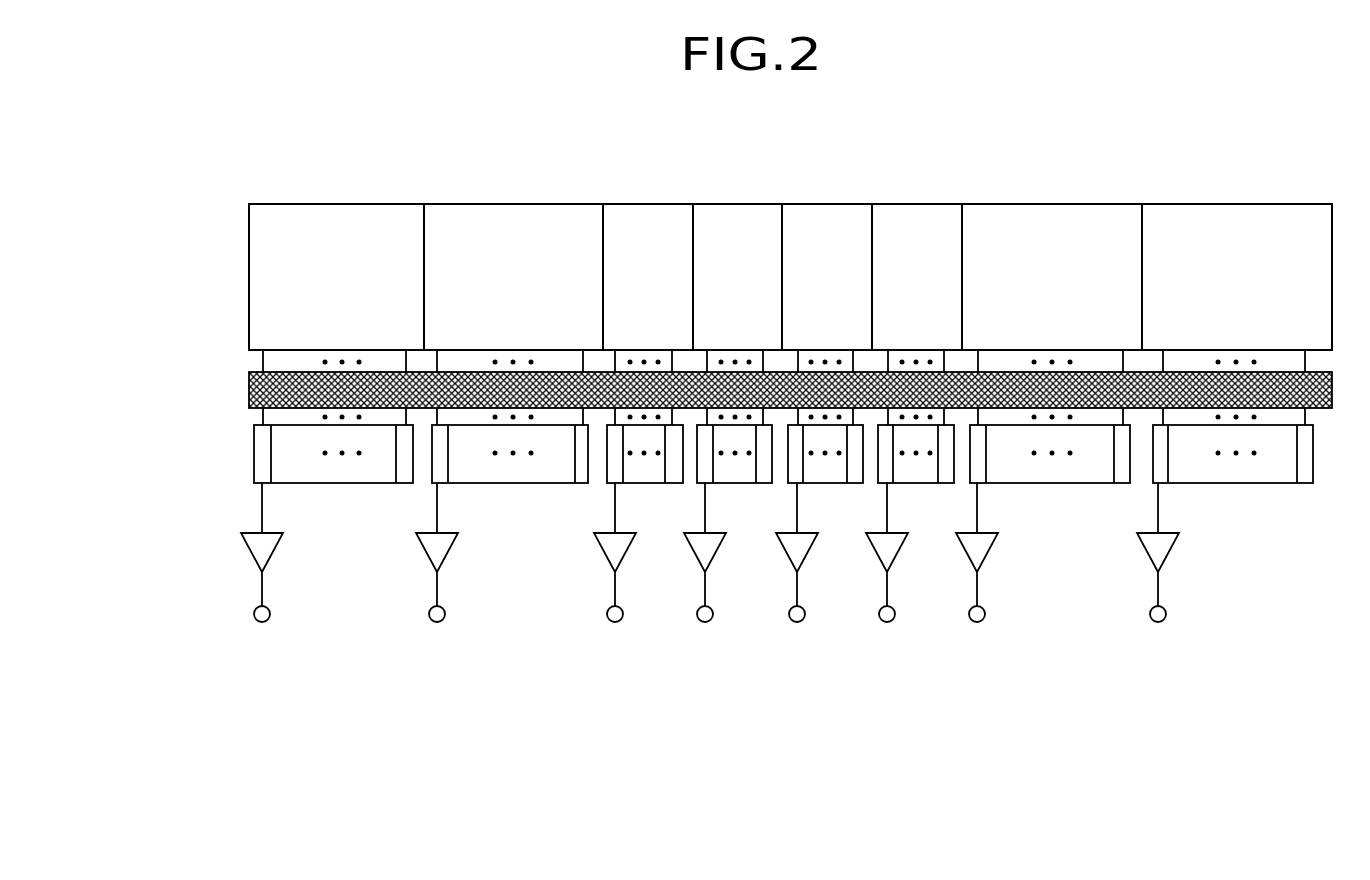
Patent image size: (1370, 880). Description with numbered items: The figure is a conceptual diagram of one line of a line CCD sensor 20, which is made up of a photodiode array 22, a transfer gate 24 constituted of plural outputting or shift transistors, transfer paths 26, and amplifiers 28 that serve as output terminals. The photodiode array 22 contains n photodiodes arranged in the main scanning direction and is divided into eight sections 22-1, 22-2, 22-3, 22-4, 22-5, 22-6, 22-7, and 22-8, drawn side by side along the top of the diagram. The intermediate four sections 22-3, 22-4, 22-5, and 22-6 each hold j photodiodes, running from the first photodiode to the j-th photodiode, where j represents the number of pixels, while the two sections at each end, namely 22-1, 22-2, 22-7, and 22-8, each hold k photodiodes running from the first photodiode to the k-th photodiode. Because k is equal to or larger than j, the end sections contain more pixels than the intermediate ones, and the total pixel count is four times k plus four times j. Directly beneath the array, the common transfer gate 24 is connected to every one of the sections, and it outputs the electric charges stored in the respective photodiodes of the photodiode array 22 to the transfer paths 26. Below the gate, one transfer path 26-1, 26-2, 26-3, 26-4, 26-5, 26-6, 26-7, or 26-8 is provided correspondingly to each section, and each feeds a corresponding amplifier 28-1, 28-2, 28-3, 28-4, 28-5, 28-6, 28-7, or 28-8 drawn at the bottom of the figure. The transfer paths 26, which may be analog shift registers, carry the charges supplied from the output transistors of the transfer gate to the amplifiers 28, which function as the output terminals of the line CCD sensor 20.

The line CCD sensor 20 is at (1134, 158).
The photodiode array 22 is at (242, 258).
The section 22-1 is at (312, 203).
The section 22-2 is at (485, 203).
The section 22-3 is at (632, 203).
The section 22-4 is at (725, 203).
The section 22-5 is at (816, 203).
The section 22-6 is at (910, 203).
The section 22-7 is at (1000, 203).
The section 22-8 is at (1207, 203).
The transfer gate 24 is at (240, 388).
The transfer paths 26 is at (250, 446).
The transfer path 26-1 is at (338, 483).
The transfer path 26-2 is at (512, 483).
The transfer path 26-3 is at (643, 483).
The transfer path 26-4 is at (733, 483).
The transfer path 26-5 is at (825, 483).
The transfer path 26-6 is at (915, 483).
The transfer path 26-7 is at (1005, 483).
The transfer path 26-8 is at (1237, 483).
The amplifiers 28 is at (214, 566).
The amplifier 28-1 is at (272, 553).
The amplifier 28-2 is at (447, 553).
The amplifier 28-3 is at (605, 562).
The amplifier 28-4 is at (695, 562).
The amplifier 28-5 is at (787, 562).
The amplifier 28-6 is at (877, 562).
The amplifier 28-7 is at (967, 562).
The amplifier 28-8 is at (1168, 558).